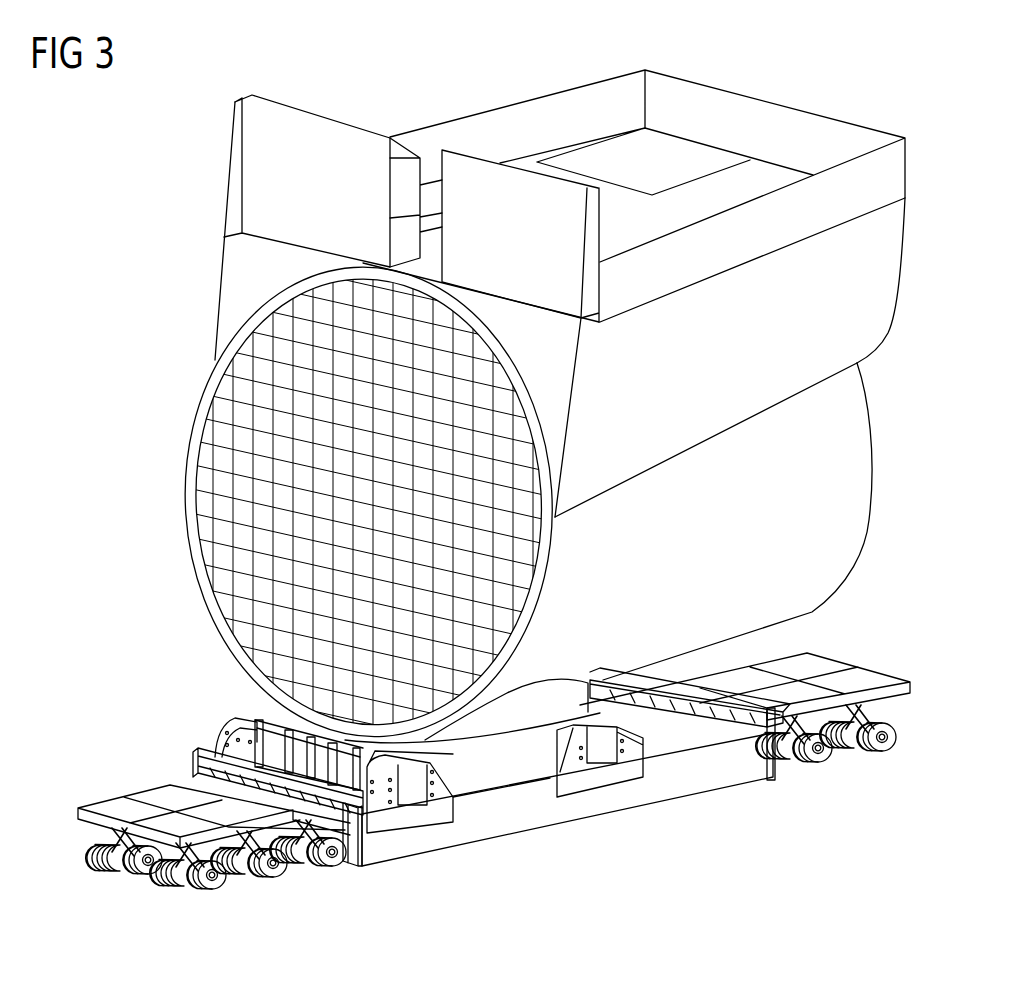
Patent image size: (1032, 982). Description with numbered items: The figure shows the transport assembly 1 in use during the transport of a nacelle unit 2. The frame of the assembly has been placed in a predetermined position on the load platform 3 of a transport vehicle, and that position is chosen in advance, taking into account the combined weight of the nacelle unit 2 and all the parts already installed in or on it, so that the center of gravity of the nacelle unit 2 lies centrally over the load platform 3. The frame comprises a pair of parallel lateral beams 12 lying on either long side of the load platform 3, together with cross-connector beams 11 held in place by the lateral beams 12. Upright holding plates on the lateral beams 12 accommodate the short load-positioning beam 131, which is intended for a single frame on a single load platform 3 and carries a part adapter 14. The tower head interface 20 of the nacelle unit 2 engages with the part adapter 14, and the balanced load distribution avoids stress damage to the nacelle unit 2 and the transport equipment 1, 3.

The transport assembly 1 is at (448, 888).
The nacelle unit 2 is at (857, 508).
The load platform 3 is at (125, 807).
The cross-connector beam 11 is at (207, 760).
The lateral beam 12 is at (727, 778).
The part adapter 14 is at (490, 782).
The tower head interface 20 is at (493, 727).
The short load-positioning beam 131 is at (227, 740).